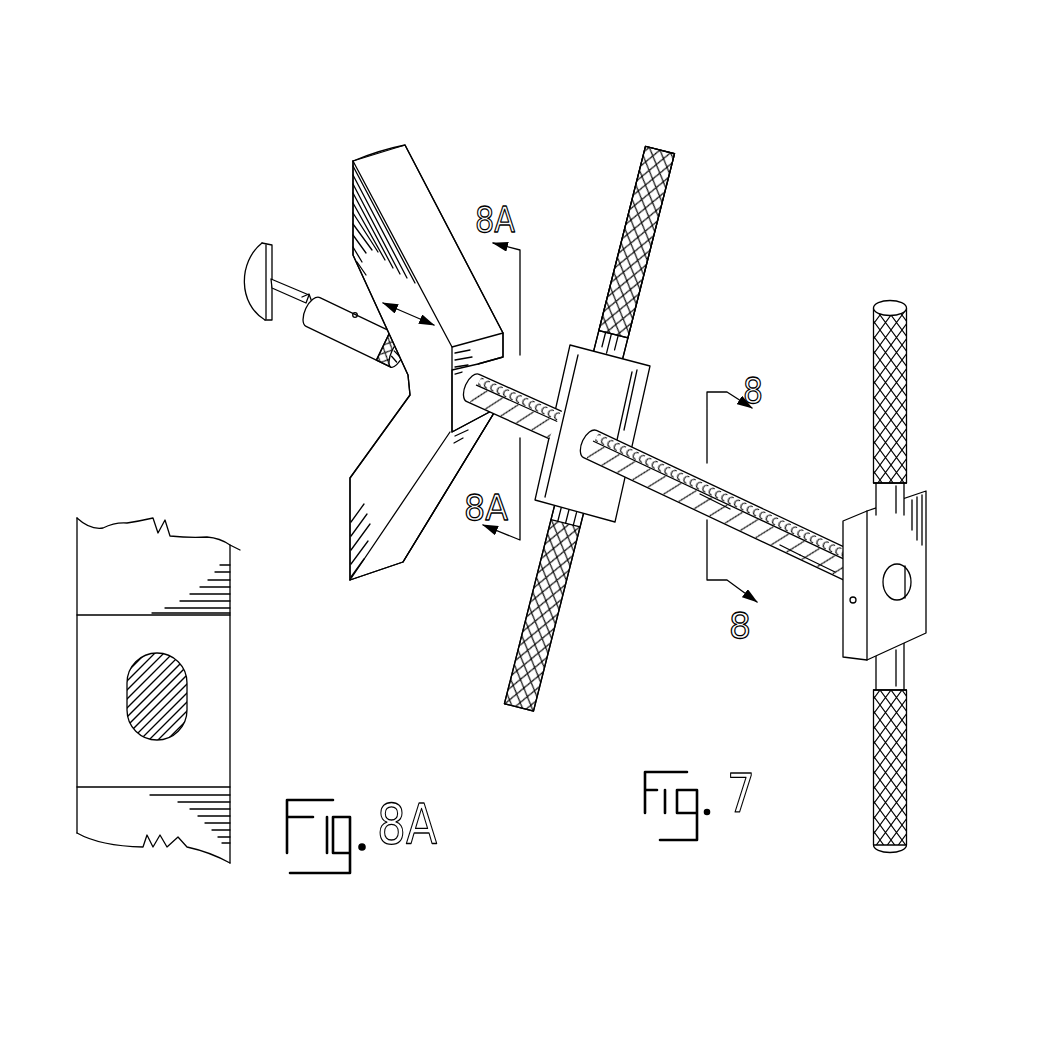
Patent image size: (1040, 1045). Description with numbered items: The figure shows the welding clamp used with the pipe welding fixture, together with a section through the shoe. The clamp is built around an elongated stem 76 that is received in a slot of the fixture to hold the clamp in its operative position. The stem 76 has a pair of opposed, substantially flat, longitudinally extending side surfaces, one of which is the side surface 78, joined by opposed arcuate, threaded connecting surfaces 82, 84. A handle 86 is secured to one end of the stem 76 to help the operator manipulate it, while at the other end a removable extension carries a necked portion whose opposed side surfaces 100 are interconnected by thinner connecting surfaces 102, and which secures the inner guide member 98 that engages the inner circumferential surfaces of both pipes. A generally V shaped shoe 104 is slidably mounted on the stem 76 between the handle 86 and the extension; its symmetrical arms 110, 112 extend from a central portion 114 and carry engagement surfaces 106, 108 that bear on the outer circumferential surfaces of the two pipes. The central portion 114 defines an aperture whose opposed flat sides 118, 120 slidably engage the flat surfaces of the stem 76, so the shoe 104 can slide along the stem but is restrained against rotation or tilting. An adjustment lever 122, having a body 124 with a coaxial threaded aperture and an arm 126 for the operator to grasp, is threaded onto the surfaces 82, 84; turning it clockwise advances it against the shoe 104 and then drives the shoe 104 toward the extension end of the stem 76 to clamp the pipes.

In FIG. 7, the stem 76 is at (798, 510).
In FIG. 8A, the stem 76 is at (170, 715).
In FIG. 7, the side surface 78 is at (820, 548).
In FIG. 7, the threaded connecting surface 82 is at (732, 484).
In FIG. 7, the threaded connecting surface 84 is at (798, 553).
In FIG. 7, the handle 86 is at (903, 537).
In FIG. 7, the inner guide member 98 is at (254, 262).
In FIG. 7, the side surface 100 is at (297, 308).
In FIG. 7, the connecting surface 102 is at (316, 296).
In FIG. 7, the V shaped shoe 104 is at (456, 180).
In FIG. 8A, the V shaped shoe 104 is at (250, 607).
In FIG. 7, the engagement surface 106 is at (350, 203).
In FIG. 7, the engagement surface 108 is at (350, 538).
In FIG. 7, the arm 110 is at (403, 182).
In FIG. 7, the arm 112 is at (405, 527).
In FIG. 8A, the central portion 114 is at (203, 770).
In FIG. 8A, the flat side 118 is at (127, 687).
In FIG. 8A, the flat side 120 is at (187, 693).
In FIG. 7, the adjustment lever 122 is at (722, 232).
In FIG. 7, the body 124 is at (612, 383).
In FIG. 7, the arm 126 is at (662, 168).